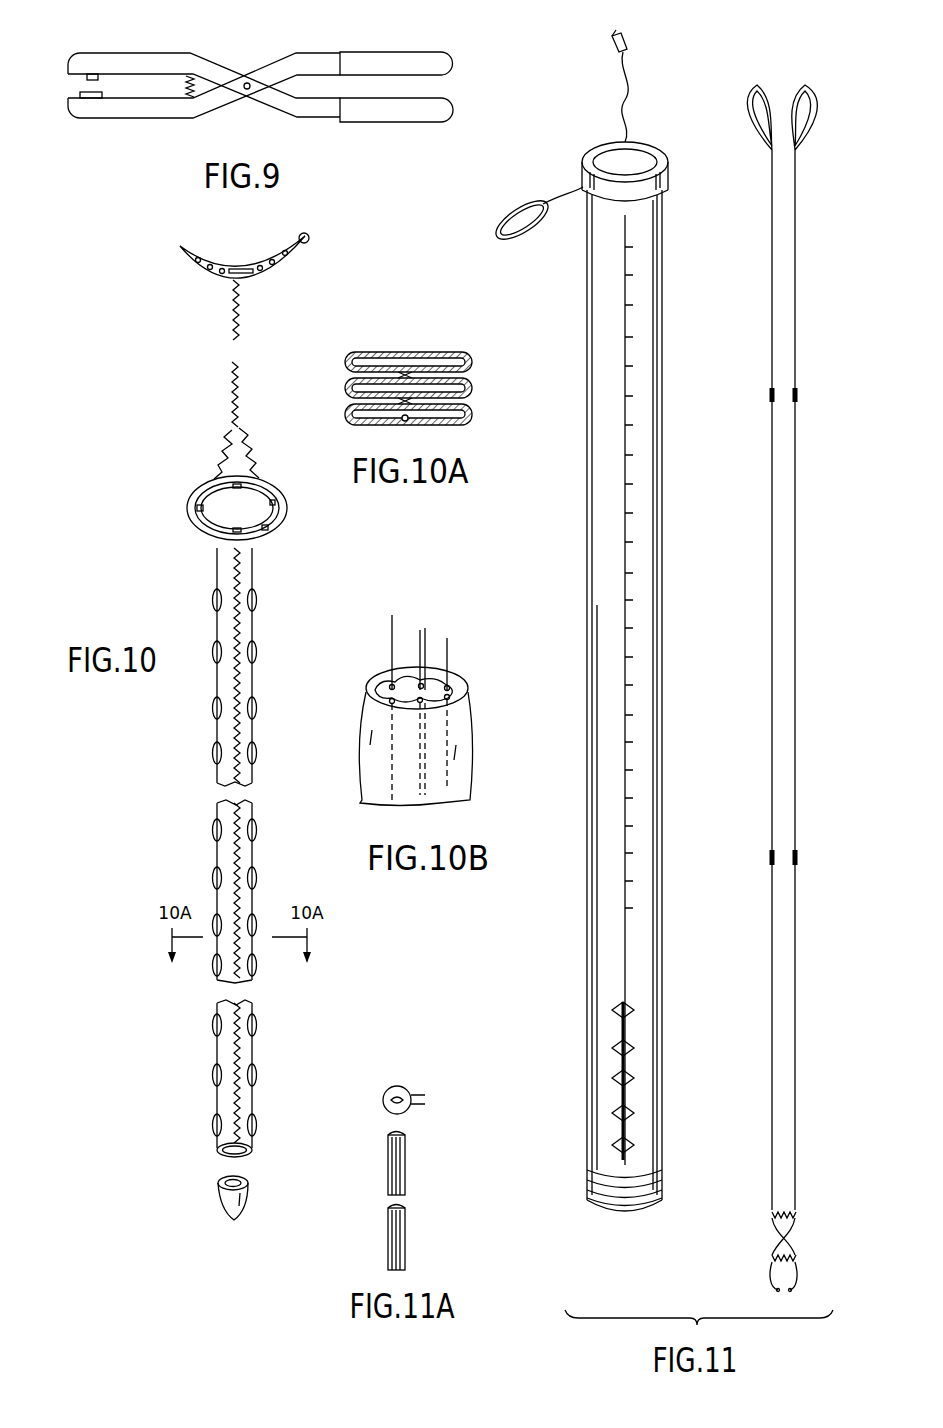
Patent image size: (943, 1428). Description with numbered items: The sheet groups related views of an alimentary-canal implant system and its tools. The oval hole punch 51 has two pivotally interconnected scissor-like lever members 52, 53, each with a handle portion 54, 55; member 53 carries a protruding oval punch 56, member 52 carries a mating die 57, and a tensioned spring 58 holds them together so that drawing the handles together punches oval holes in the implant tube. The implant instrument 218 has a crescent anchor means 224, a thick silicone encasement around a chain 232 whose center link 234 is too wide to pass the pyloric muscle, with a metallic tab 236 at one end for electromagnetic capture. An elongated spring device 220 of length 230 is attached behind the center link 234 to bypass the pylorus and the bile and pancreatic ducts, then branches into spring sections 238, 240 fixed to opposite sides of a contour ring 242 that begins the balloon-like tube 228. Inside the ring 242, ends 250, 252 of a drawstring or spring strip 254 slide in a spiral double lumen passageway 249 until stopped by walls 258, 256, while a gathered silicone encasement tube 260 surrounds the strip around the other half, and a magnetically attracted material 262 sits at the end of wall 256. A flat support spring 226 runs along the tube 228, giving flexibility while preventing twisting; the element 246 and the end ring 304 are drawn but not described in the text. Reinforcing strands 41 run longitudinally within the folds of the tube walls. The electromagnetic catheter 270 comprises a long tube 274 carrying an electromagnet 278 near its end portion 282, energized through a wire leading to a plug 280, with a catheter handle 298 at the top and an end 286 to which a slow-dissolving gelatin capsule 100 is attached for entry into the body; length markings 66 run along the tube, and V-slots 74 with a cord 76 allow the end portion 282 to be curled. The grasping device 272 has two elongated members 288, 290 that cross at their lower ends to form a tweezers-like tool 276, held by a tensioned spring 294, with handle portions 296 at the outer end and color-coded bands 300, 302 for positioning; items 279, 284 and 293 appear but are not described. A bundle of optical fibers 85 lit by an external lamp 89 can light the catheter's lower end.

In FIG. 9, the oval hole punch 51 is at (345, 40).
In FIG. 9, the scissor-like lever member 52 is at (275, 70).
In FIG. 9, the scissor-like lever member 53 is at (285, 103).
In FIG. 9, the handle portion 54 is at (442, 62).
In FIG. 9, the handle portion 55 is at (433, 108).
In FIG. 9, the protruding oval punch 56 is at (92, 74).
In FIG. 9, the mating die 57 is at (88, 97).
In FIG. 9, the tensioned spring 58 is at (185, 88).
In FIG. 10, the implant instrument 218 is at (270, 390).
In FIG. 10, the elongated spring device 220 is at (238, 323).
In FIG. 10, the crescent anchor means 224 is at (235, 254).
In FIG. 10, the flat spring 226 is at (238, 861).
In FIG. 10A, the flat spring 226 is at (420, 428).
In FIG. 10, the balloon-like tube 228 is at (208, 714).
In FIG. 10, the length 230 is at (180, 513).
In FIG. 10, the chain 232 is at (187, 263).
In FIG. 10, the center link 234 is at (230, 262).
In FIG. 10, the metallic tab 236 is at (310, 238).
In FIG. 10, the spring section 238 is at (220, 446).
In FIG. 10, the spring section 240 is at (247, 436).
In FIG. 10, the contour ring 242 is at (270, 474).
In FIG. 10, the central cord 246 is at (217, 737).
In FIG. 10, the spiral double lumen passageway 249 is at (282, 520).
In FIG. 10, the end of spring strip 250 is at (274, 502).
In FIG. 10, the end of spring strip 252 is at (283, 518).
In FIG. 10, the drawstring or spring strip 254 is at (188, 520).
In FIG. 10, the wall 256 is at (236, 483).
In FIG. 10, the wall 258 is at (236, 532).
In FIG. 10, the gathered silicone encasement tube 260 is at (197, 533).
In FIG. 10, the magnetically attracted material 262 is at (204, 484).
In FIG. 10, the end ring 304 is at (246, 1157).
In FIG. 10, the gelatin capsule 100 is at (225, 1200).
In FIG. 10B, the reinforcing strands 41 is at (449, 668).
In FIG. 11A, the lamp 89 is at (400, 1087).
In FIG. 11A, the bundle of optical fibers 85 is at (405, 1238).
In FIG. 11, the length markings 66 is at (625, 645).
In FIG. 11, the V-slots 74 is at (632, 1068).
In FIG. 11, the cord 76 is at (627, 1008).
In FIG. 11, the electromagnetic catheter 270 is at (578, 620).
In FIG. 11, the grasping device 272 is at (808, 520).
In FIG. 11, the long tube 274 is at (587, 540).
In FIG. 11, the tweezers-like tool 276 is at (815, 1280).
In FIG. 11, the electromagnet 278 is at (655, 1185).
In FIG. 11, the tether cord 279 is at (622, 84).
In FIG. 11, the plug 280 is at (632, 44).
In FIG. 11, the end portion 282 is at (560, 998).
In FIG. 11, the ring 284 is at (507, 240).
In FIG. 11, the catheter end 286 is at (625, 1216).
In FIG. 11, the elongated member 288 is at (771, 932).
In FIG. 11, the elongated member 290 is at (796, 961).
In FIG. 11, the lower coil 293 is at (798, 1260).
In FIG. 11, the tensioned spring 294 is at (792, 1213).
In FIG. 11, the handle portions 296 is at (758, 88).
In FIG. 11, the catheter handle 298 is at (584, 165).
In FIG. 11, the color-coded band 300 is at (798, 393).
In FIG. 11, the color-coded band 302 is at (800, 857).